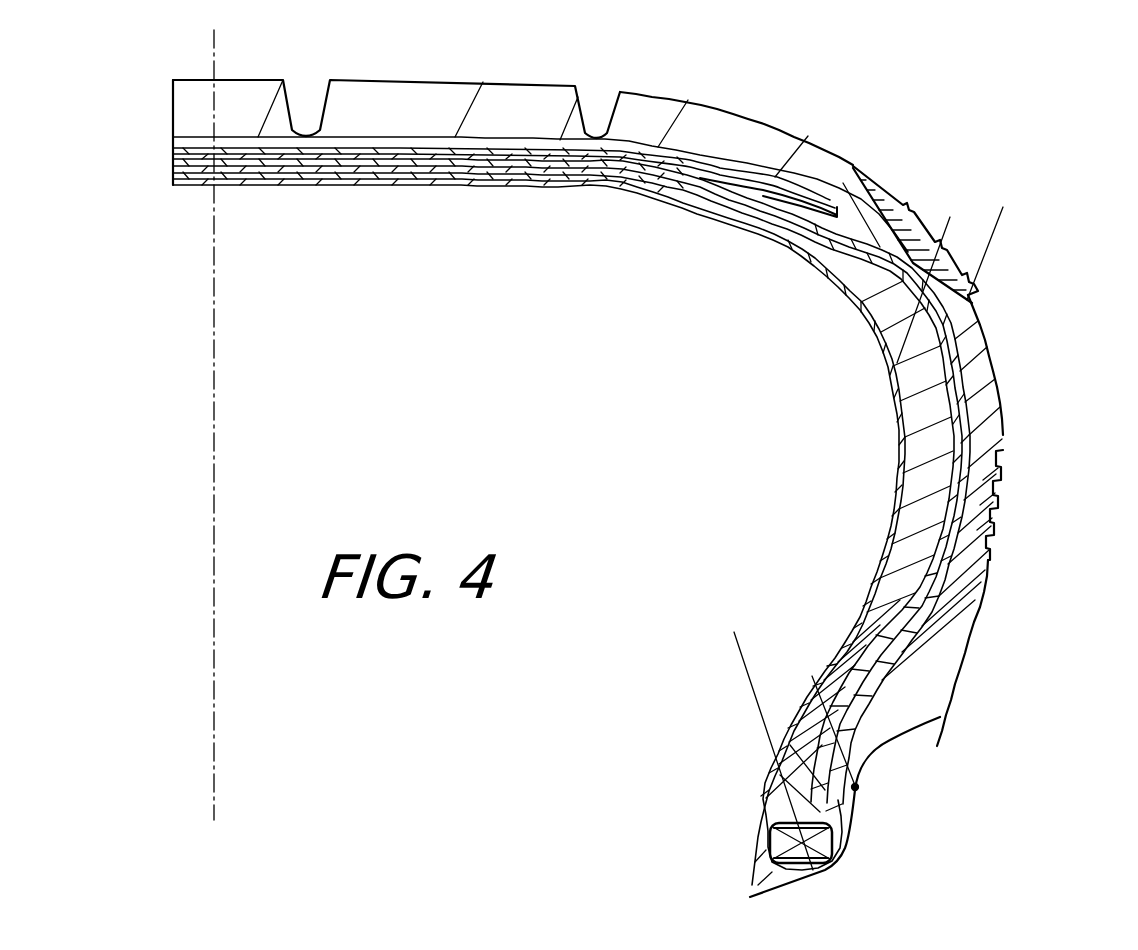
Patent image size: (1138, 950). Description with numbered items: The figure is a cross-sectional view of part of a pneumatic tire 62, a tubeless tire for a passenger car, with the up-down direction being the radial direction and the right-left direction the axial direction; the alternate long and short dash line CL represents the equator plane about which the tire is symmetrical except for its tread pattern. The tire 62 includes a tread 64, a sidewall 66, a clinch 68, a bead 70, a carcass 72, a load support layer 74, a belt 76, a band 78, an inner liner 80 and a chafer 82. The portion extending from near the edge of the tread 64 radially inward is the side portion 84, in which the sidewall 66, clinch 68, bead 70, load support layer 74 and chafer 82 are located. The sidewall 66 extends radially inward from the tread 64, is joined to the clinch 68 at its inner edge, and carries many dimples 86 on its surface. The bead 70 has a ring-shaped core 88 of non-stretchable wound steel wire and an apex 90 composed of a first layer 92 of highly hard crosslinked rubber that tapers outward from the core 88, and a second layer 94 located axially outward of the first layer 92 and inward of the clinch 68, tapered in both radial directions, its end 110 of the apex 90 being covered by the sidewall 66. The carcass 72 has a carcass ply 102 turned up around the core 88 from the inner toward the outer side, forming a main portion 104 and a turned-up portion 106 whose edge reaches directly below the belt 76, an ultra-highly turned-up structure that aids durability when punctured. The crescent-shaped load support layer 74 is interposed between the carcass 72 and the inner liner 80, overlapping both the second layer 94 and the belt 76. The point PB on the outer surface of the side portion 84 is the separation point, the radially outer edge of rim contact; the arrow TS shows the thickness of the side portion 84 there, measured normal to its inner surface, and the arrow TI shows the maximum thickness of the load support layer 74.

The pneumatic tire 62 is at (950, 80).
The tread 64 is at (668, 90).
The sidewall 66 is at (990, 383).
The clinch 68 is at (945, 722).
The bead 70 is at (740, 731).
The carcass 72 is at (540, 220).
The load support layer 74 is at (905, 487).
The belt 76 is at (523, 178).
The band 78 is at (748, 162).
The inner liner 80 is at (360, 188).
The chafer 82 is at (775, 880).
The side portion 84 is at (1015, 322).
The dimple 86 is at (1002, 470).
The core 88 is at (782, 845).
The apex 90 is at (767, 706).
The first layer 92 is at (785, 771).
The second layer 94 is at (805, 725).
The carcass ply 102 is at (432, 188).
The main portion 104 is at (925, 560).
The turned-up portion 106 is at (937, 647).
The end of the apex 110 is at (975, 497).
The equator plane CL is at (215, 708).
The maximum thickness of the load support layer TI is at (997, 217).
The thickness of the side portion TS is at (812, 676).
The separation point PB is at (858, 788).